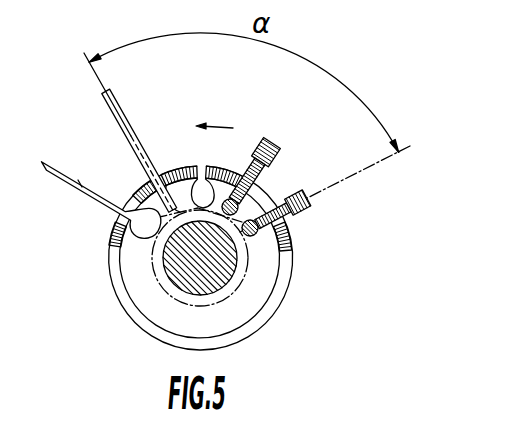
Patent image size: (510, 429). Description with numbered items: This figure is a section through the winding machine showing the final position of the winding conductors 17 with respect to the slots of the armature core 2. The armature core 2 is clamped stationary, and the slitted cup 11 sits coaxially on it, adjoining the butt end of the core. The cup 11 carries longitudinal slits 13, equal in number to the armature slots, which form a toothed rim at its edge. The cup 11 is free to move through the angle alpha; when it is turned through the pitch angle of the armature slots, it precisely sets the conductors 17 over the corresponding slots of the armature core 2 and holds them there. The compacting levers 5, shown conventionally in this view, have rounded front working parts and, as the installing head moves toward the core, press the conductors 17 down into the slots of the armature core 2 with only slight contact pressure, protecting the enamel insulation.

The armature core 2 is at (137, 285).
The compacting levers 5 is at (300, 192).
The slitted cup 11 is at (185, 164).
The longitudinal slits 13 is at (203, 172).
The winding conductors 17 is at (128, 128).